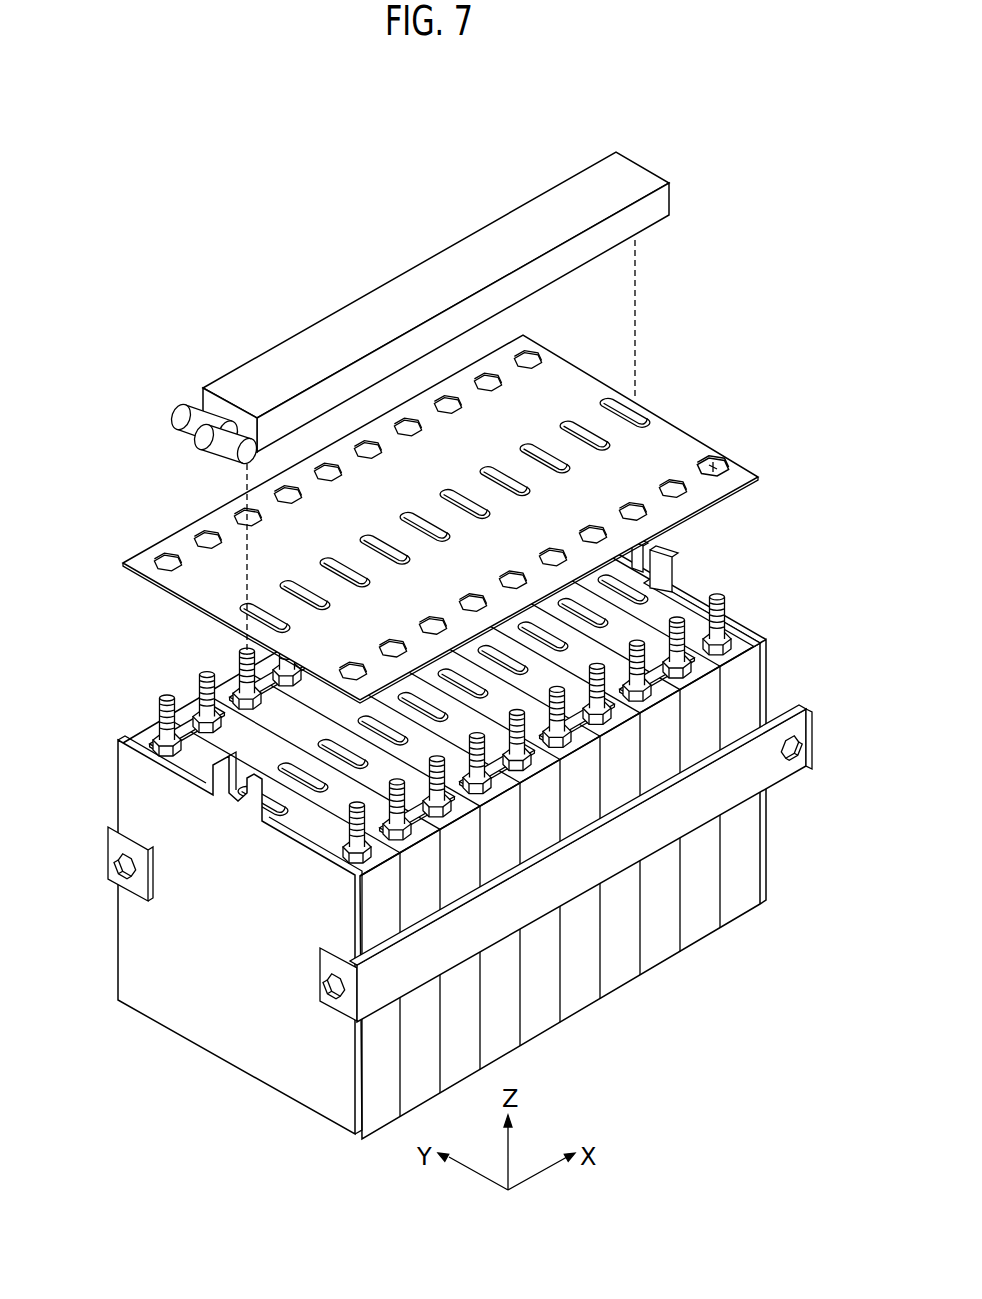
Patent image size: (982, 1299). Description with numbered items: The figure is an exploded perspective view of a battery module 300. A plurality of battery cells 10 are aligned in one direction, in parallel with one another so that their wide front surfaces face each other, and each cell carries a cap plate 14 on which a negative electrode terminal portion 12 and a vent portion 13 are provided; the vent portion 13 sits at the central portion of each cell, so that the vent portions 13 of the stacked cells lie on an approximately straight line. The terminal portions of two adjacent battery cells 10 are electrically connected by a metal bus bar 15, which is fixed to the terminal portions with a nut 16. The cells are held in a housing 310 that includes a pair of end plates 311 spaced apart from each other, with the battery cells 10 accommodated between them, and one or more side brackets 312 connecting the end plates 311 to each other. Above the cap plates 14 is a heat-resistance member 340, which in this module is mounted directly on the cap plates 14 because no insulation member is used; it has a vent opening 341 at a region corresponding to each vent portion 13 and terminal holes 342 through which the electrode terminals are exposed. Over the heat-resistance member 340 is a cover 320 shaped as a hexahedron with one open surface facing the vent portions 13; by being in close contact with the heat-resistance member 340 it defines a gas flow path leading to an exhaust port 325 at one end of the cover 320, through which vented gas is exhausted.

The battery module 300 is at (463, 637).
The cover 320 is at (636, 163).
The exhaust port 325 is at (177, 411).
The heat-resistance member 340 is at (460, 519).
The vent opening 341 is at (626, 402).
The terminal hole 342 is at (722, 461).
The battery cell 10 is at (474, 827).
The negative electrode terminal portion 12 is at (719, 600).
The vent portion 13 is at (630, 581).
The cap plate 14 is at (738, 652).
The bus bar 15 is at (187, 716).
The nut 16 is at (153, 736).
The housing 310 is at (235, 953).
The end plate 311 is at (160, 940).
The side bracket 312 is at (333, 1005).